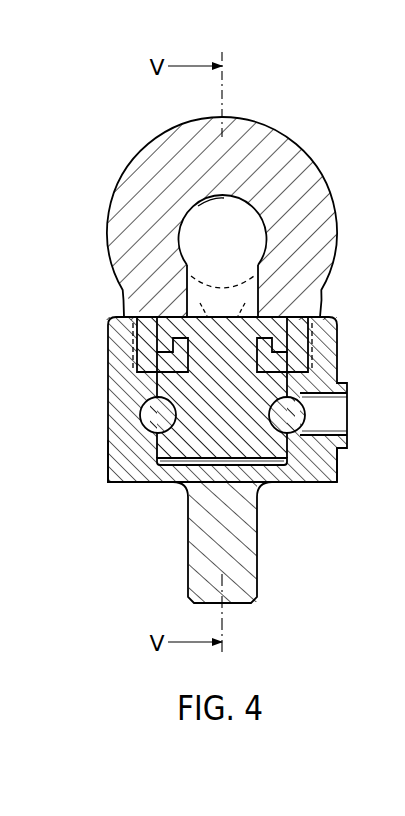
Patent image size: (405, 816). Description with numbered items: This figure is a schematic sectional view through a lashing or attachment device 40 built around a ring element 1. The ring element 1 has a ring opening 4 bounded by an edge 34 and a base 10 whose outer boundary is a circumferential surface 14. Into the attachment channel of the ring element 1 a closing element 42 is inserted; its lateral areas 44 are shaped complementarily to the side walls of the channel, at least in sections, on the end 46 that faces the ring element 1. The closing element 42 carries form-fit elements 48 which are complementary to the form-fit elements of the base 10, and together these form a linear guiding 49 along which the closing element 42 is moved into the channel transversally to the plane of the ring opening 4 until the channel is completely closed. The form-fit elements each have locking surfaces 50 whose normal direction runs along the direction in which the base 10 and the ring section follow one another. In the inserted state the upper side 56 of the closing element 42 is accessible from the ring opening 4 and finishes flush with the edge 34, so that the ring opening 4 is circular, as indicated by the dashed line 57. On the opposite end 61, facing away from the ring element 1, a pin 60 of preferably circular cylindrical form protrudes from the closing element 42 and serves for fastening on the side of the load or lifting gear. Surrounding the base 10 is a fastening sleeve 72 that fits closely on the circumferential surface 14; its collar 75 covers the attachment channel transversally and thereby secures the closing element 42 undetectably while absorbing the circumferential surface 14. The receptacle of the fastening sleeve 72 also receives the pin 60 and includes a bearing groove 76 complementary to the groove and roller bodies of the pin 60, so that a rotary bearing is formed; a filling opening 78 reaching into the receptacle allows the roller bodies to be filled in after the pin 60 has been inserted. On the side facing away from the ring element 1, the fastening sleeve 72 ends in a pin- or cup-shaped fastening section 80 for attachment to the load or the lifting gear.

The ring element 1 is at (367, 192).
The ring opening 4 is at (203, 238).
The base 10 is at (113, 331).
The circumferential surface 14 is at (310, 347).
The edge 34 is at (204, 205).
The lashing or attachment device 40 is at (302, 124).
The closing element 42 is at (268, 448).
The lateral areas 44 is at (197, 349).
The end 46 is at (301, 305).
The form-fit elements 48 is at (149, 305).
The linear guiding 49 is at (149, 305).
The locking surfaces 50 is at (156, 383).
The upper side 56 is at (187, 271).
The dashed line 57 is at (216, 290).
The pin 60 is at (148, 450).
The end 61 is at (191, 474).
The fastening sleeve 72 is at (322, 463).
The collar 75 is at (152, 375).
The bearing groove 76 is at (150, 416).
The filling opening 78 is at (335, 413).
The fastening section 80 is at (263, 568).